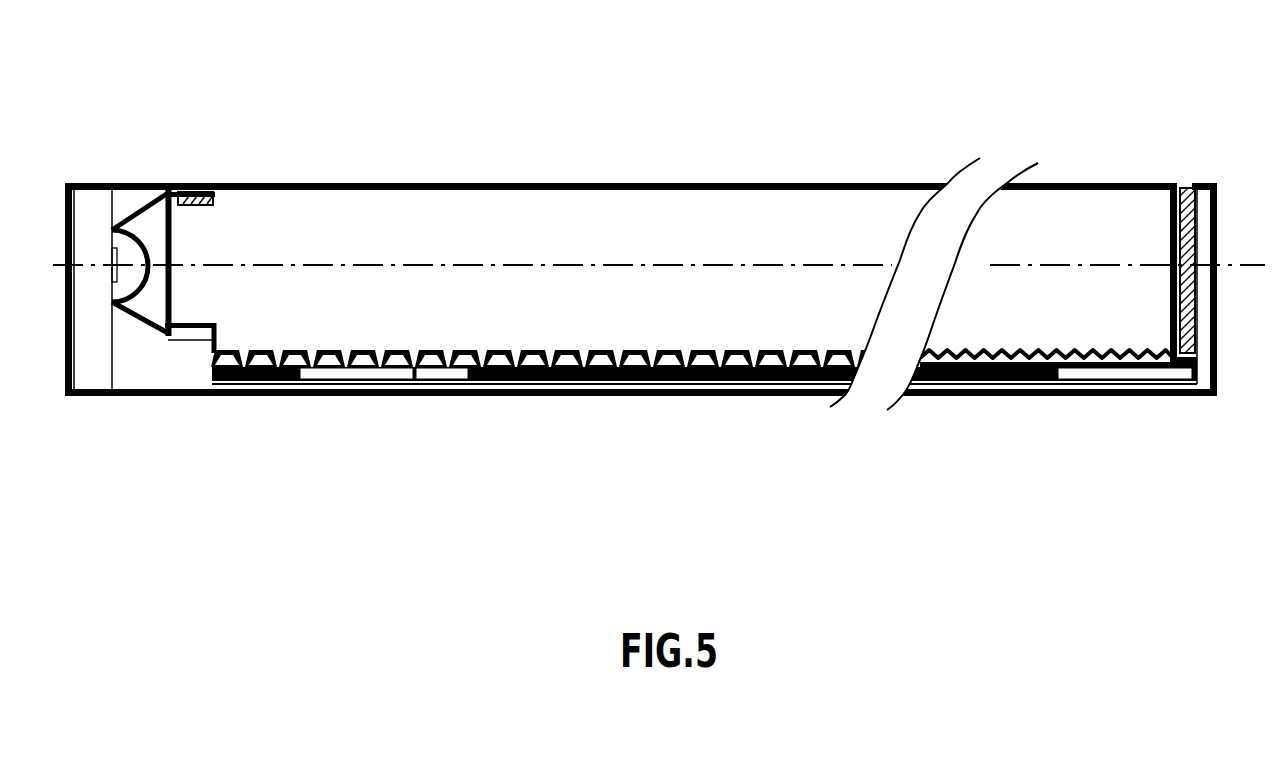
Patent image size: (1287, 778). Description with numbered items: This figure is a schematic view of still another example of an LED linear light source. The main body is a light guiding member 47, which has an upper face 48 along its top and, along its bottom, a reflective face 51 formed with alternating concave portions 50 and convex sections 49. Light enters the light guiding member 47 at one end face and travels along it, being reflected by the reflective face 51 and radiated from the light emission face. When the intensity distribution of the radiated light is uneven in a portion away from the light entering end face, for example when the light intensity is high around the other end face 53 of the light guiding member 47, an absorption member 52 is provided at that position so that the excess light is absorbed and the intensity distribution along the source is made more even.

The light guiding member 47 is at (529, 183).
The upper face 48 is at (805, 183).
The convex sections 49 is at (580, 380).
The concave portions 50 is at (413, 383).
The reflective face 51 is at (382, 482).
The absorption member 52 is at (1105, 380).
The other end face 53 is at (1175, 183).